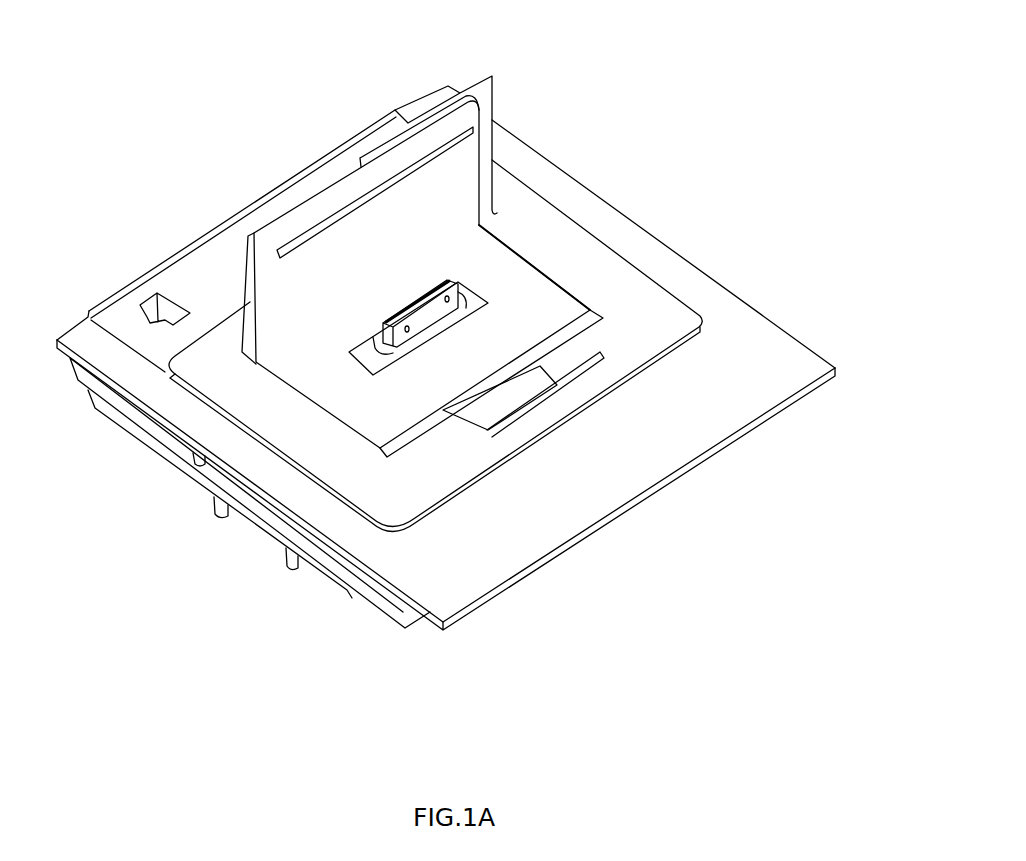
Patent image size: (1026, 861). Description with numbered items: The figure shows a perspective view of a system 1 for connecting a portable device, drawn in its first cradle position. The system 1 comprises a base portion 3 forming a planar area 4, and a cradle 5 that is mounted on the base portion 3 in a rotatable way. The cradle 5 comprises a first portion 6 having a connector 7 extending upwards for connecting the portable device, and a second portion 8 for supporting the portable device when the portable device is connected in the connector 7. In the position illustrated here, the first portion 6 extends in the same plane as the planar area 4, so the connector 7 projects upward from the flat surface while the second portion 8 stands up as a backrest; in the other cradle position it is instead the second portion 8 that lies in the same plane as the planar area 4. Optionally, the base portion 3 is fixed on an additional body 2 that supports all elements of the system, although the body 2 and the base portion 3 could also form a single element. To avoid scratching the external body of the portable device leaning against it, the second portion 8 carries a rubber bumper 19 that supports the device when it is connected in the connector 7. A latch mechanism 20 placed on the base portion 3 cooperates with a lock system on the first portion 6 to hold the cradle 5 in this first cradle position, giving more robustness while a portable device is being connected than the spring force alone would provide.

The system 1 is at (140, 160).
The body 2 is at (767, 317).
The base portion 3 is at (683, 298).
The planar area 4 is at (607, 370).
The cradle 5 is at (527, 258).
The first portion 6 is at (542, 316).
The connector 7 is at (350, 358).
The second portion 8 is at (460, 190).
The rubber bumper 19 is at (493, 95).
The latch mechanism 20 is at (500, 410).